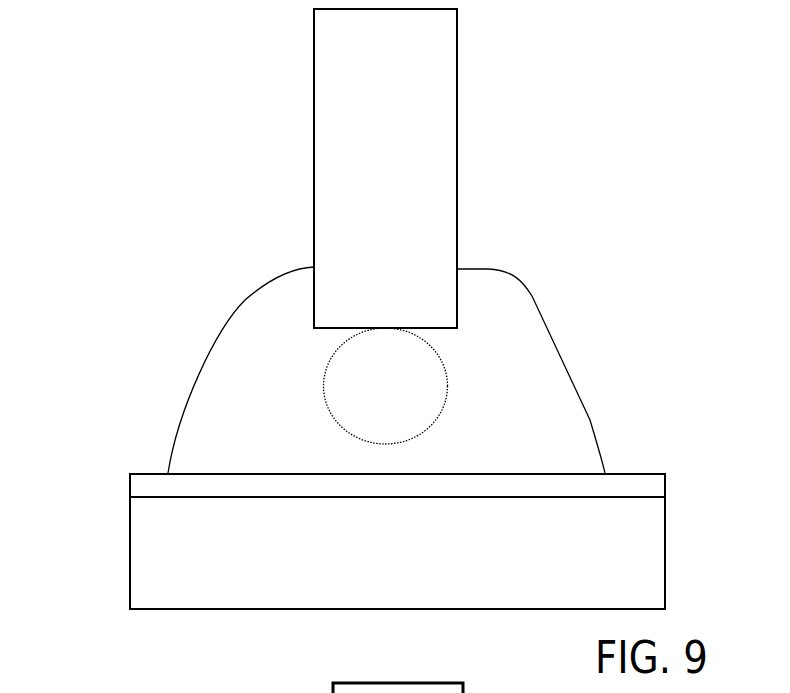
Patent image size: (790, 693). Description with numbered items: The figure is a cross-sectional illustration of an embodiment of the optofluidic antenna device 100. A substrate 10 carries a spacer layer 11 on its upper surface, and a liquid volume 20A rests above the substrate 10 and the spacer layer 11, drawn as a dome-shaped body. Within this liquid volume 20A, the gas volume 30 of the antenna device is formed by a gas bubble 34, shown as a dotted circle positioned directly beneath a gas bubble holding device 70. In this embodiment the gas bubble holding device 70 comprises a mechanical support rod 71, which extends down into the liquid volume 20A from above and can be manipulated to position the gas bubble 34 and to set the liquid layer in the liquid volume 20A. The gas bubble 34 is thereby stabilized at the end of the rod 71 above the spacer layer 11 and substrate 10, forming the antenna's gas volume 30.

The optofluidic antenna device 100 is at (186, 187).
The gas bubble holding device 70 is at (398, 98).
The mechanical support rod 71 is at (440, 160).
The liquid volume 20A is at (287, 315).
The gas bubble 34 is at (386, 386).
The gas volume 30 is at (386, 386).
The spacer layer 11 is at (137, 482).
The substrate 10 is at (137, 578).